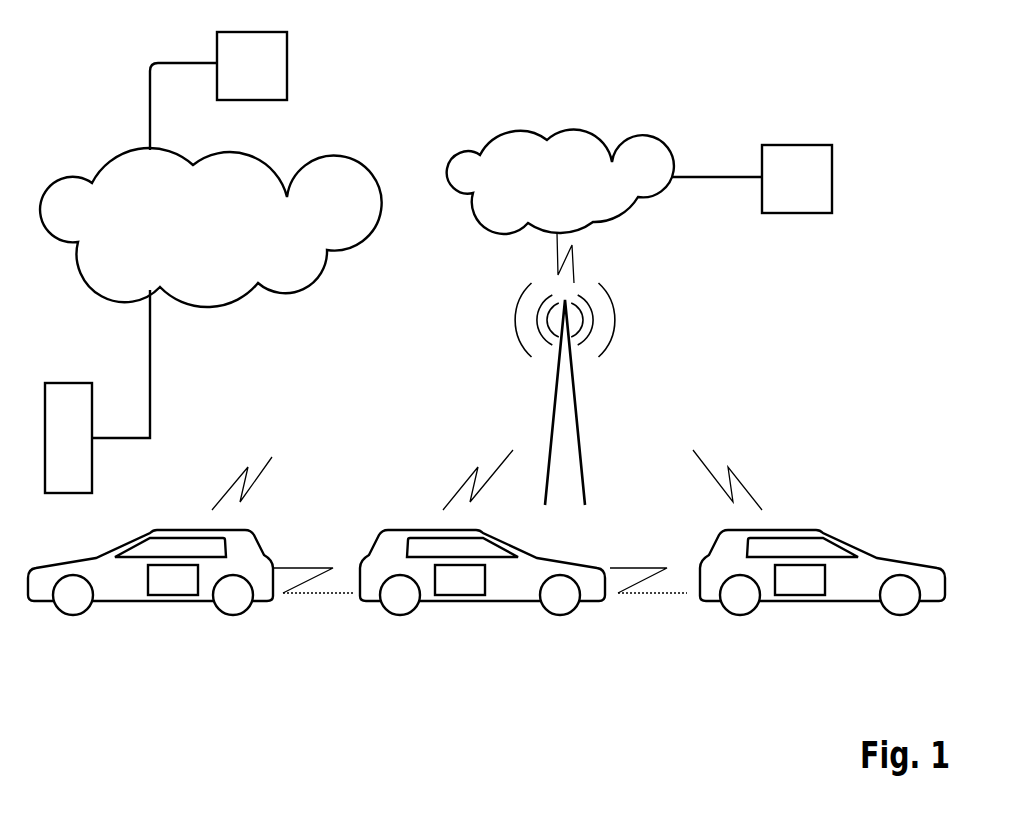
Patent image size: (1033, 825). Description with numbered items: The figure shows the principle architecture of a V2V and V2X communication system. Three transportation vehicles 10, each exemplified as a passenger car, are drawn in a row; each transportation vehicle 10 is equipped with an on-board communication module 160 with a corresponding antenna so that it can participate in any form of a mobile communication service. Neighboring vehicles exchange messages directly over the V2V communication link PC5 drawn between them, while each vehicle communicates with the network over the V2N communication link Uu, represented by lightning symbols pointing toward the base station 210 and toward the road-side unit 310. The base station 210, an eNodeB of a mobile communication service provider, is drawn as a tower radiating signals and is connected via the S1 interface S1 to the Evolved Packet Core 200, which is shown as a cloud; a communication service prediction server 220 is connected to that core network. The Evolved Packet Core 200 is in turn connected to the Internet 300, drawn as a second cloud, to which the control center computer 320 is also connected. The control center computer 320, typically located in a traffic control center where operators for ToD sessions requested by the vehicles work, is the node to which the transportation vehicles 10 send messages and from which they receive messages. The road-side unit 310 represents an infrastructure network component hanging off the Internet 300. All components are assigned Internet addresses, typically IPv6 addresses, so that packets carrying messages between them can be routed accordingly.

The transportation vehicle 10 is at (122, 587).
The on-board communication module 160 is at (175, 587).
The Evolved Packet Core 200 is at (602, 135).
The base station 210 is at (582, 422).
The communication service prediction server 220 is at (797, 145).
The Internet 300 is at (108, 163).
The road-side unit 310 is at (68, 392).
The control center computer 320 is at (287, 63).
The S1 interface S1 is at (573, 268).
The V2N communication link Uu is at (275, 457).
The V2V communication link PC5 is at (307, 567).